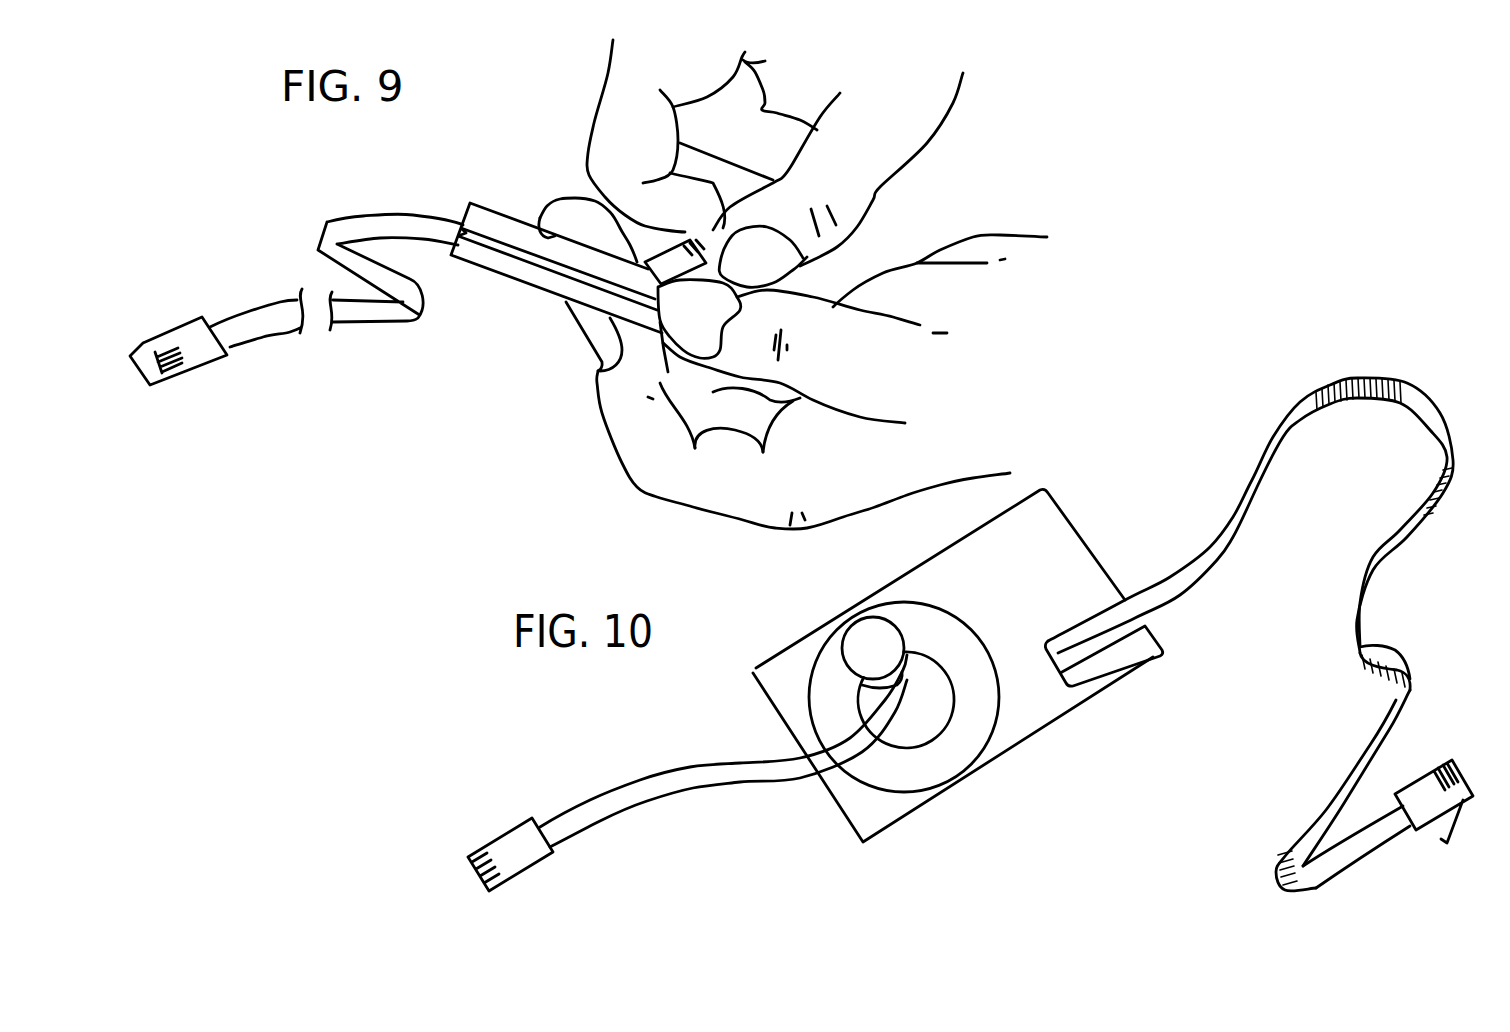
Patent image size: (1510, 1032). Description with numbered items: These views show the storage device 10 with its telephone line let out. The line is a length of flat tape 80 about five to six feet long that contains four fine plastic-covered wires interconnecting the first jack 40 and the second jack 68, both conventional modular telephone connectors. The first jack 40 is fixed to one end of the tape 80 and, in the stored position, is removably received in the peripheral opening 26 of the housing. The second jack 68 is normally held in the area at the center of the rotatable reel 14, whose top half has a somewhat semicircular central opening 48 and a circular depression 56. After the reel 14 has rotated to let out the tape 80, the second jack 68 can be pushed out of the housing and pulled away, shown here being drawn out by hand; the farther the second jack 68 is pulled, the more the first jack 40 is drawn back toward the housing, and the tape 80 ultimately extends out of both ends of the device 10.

In FIG. 9, the storage device 10 is at (520, 275).
In FIG. 10, the storage device 10 is at (940, 562).
In FIG. 10, the rotatable reel 14 is at (947, 763).
In FIG. 10, the peripheral opening 26 is at (1060, 663).
In FIG. 9, the first jack 40 is at (190, 332).
In FIG. 10, the first jack 40 is at (1419, 800).
In FIG. 10, the central opening 48 is at (944, 673).
In FIG. 10, the circular depression 56 is at (884, 647).
In FIG. 9, the second jack 68 is at (670, 260).
In FIG. 10, the second jack 68 is at (522, 840).
In FIG. 9, the flat tape 80 is at (361, 227).
In FIG. 10, the flat tape 80 is at (893, 710).